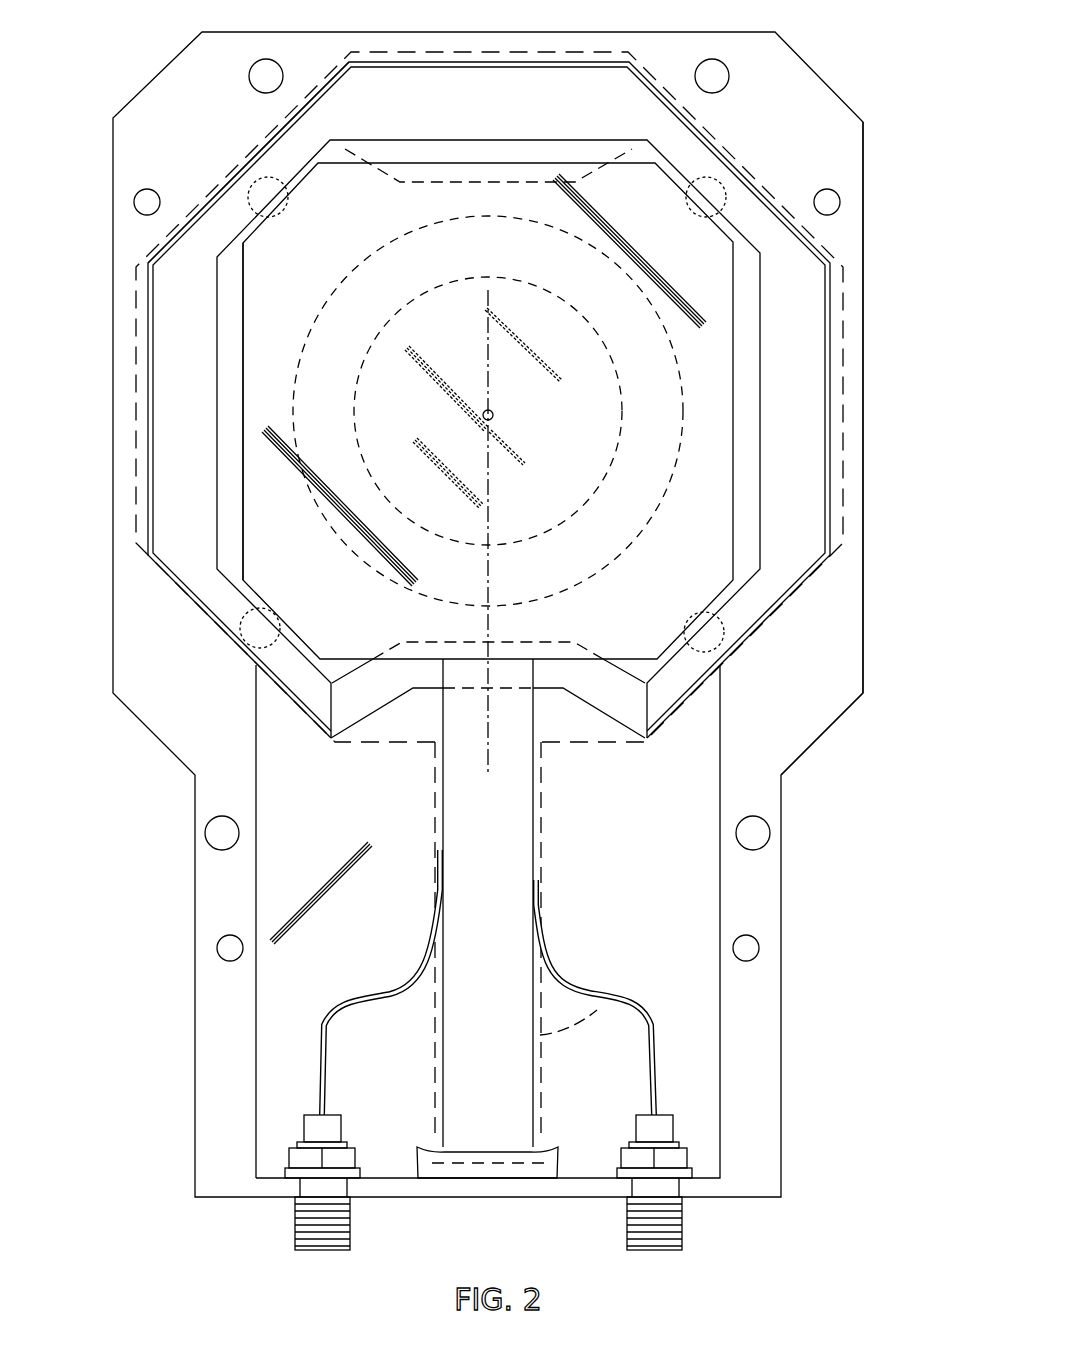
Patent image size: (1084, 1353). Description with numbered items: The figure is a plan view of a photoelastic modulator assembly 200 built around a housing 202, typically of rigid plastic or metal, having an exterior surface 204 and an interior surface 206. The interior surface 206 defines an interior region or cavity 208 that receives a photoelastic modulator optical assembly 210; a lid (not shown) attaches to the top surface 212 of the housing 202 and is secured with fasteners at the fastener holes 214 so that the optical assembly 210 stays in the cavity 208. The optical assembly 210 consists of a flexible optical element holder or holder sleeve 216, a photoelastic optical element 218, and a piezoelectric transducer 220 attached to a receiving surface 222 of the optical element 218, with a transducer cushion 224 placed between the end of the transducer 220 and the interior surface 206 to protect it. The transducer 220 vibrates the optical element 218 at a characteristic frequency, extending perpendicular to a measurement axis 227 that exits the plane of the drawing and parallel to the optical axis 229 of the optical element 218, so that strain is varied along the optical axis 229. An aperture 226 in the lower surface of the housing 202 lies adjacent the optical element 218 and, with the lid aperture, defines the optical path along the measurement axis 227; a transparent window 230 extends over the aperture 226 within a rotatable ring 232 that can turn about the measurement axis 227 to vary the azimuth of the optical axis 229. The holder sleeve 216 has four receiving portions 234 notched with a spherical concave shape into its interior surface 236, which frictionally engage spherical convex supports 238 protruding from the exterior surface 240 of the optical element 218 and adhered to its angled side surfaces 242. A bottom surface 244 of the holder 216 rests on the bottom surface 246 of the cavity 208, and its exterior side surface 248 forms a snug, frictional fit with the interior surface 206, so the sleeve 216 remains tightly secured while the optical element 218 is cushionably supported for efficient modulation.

The photoelastic modulator assembly 200 is at (102, 1076).
The housing 202 is at (113, 312).
The exterior surface 204 is at (865, 453).
The interior surface 206 is at (722, 788).
The interior region (cavity) 208 is at (369, 803).
The photoelastic modulator optical assembly 210 is at (604, 1002).
The top surface 212 is at (815, 700).
The fastener holes 214 is at (281, 69).
The optical element holder (holder sleeve) 216 is at (807, 325).
The photoelastic optical element 218 is at (733, 415).
The piezoelectric transducer 220 is at (545, 800).
The receiving surface 222 is at (565, 692).
The transducer cushion 224 is at (487, 1163).
The aperture 226 is at (388, 576).
The measurement axis 227 is at (494, 413).
The optical axis 229 is at (489, 468).
The transparent window 230 is at (390, 367).
The rotatable ring 232 is at (325, 365).
The receiving portions 234 is at (283, 175).
The interior surface 236 is at (214, 257).
The convex supports 238 is at (255, 210).
The exterior surface 240 is at (240, 293).
The angled side surfaces 242 is at (300, 173).
The bottom surface 244 is at (390, 690).
The bottom surface 246 is at (292, 790).
The exterior side surface 248 is at (163, 233).